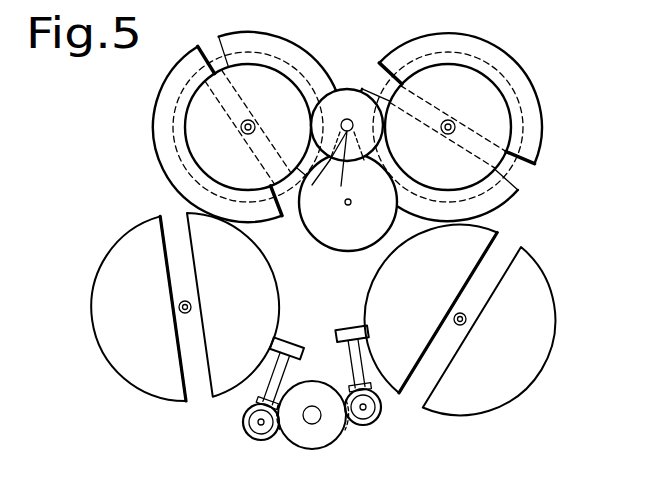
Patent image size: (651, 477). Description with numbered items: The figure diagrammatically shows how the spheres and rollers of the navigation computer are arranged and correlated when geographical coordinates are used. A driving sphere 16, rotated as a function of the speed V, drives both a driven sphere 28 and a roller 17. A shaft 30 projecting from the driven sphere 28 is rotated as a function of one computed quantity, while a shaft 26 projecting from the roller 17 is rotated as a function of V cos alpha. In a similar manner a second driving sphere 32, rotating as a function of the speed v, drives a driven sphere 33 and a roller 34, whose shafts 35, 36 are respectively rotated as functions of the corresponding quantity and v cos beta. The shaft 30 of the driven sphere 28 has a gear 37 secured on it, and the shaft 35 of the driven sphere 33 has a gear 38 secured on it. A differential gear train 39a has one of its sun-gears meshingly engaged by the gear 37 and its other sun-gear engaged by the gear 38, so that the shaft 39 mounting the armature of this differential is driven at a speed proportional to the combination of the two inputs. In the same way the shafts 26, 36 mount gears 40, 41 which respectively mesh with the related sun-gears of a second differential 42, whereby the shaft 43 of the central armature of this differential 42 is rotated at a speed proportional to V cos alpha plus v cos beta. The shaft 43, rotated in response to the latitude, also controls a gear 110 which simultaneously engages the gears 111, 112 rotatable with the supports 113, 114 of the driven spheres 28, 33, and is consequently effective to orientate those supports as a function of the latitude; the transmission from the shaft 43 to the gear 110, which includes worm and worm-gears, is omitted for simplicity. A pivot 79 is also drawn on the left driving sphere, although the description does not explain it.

The driving sphere 16 is at (103, 306).
The roller 17 is at (288, 343).
The shaft 26 is at (258, 423).
The driven sphere 28 is at (163, 101).
The shaft 30 is at (245, 131).
The driving sphere 32 is at (545, 352).
The driven sphere 33 is at (530, 112).
The roller 34 is at (351, 326).
The shaft 35 is at (449, 131).
The shaft 36 is at (380, 410).
The gear 37 is at (183, 158).
The gear 38 is at (483, 73).
The shaft 39 is at (328, 165).
The differential gear train 39a is at (348, 89).
The gear 40 is at (260, 430).
The gear 41 is at (376, 420).
The differential 42 is at (304, 437).
The shaft 43 is at (313, 405).
The disk pivot 79 is at (193, 307).
The gear 110 is at (323, 243).
The gear 111 is at (173, 125).
The gear 112 is at (508, 84).
The support 113 is at (255, 124).
The support 114 is at (455, 124).